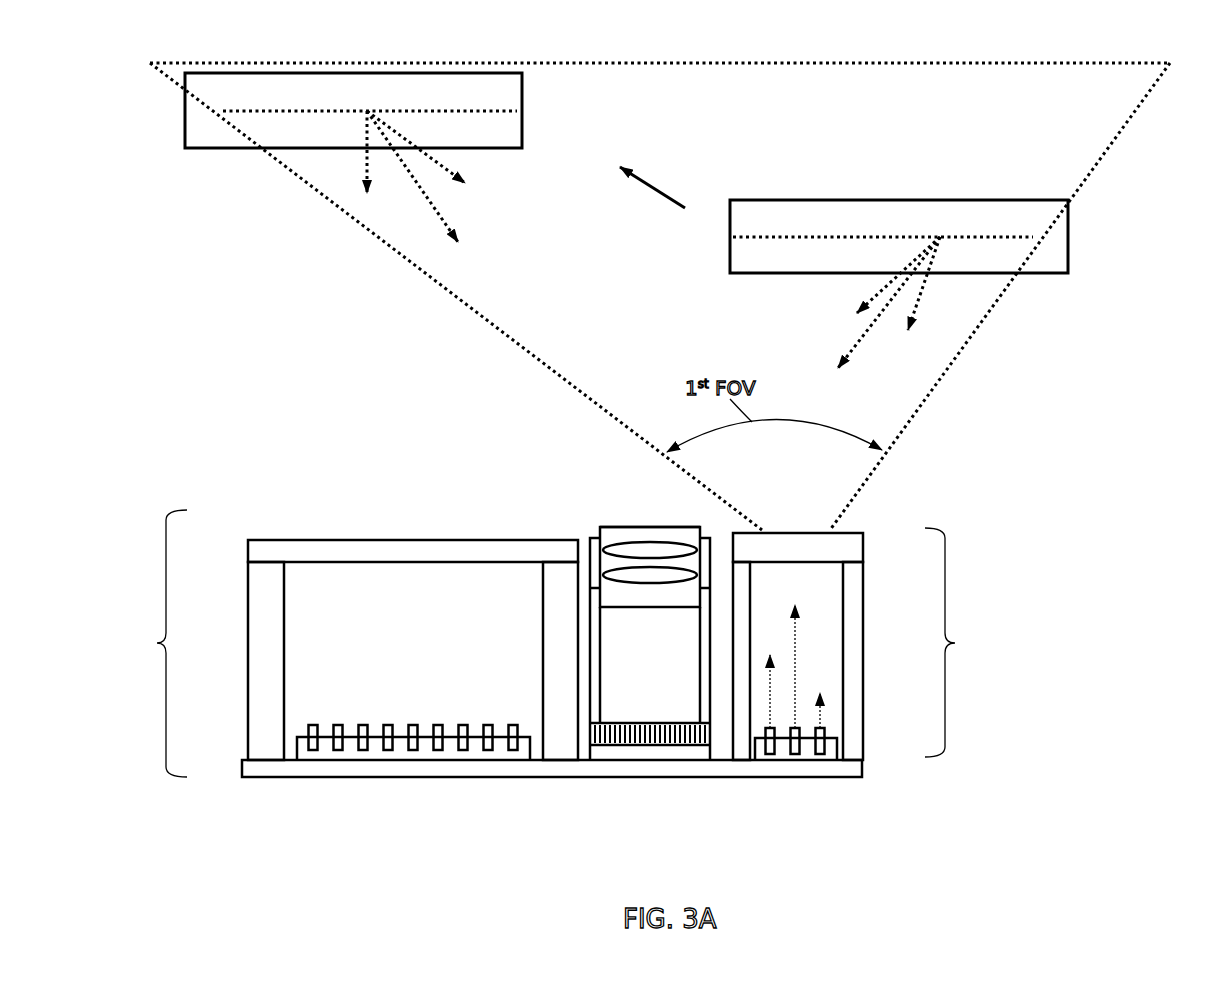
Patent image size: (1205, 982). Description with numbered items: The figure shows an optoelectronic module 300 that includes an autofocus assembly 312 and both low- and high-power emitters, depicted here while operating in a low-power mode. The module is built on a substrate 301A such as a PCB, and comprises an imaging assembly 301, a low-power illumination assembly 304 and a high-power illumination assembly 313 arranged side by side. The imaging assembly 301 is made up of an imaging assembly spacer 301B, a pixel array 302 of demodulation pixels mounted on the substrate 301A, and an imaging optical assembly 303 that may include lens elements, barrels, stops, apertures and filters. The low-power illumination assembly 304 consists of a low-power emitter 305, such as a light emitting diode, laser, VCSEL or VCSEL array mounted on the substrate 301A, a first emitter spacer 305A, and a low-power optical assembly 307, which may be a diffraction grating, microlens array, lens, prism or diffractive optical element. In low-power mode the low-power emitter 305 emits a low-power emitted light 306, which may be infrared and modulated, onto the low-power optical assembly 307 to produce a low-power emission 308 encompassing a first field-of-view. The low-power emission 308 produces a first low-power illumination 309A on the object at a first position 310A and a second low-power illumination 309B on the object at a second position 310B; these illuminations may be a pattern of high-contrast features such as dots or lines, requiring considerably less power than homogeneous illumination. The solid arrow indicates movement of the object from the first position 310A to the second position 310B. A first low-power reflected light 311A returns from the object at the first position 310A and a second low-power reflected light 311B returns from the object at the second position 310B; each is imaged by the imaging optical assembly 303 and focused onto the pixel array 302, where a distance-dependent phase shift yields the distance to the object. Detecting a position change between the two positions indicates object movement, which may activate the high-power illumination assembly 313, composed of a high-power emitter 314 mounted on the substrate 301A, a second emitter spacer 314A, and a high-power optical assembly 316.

The optoelectronic module 300 is at (122, 105).
The imaging assembly 301 is at (578, 474).
The substrate 301A is at (865, 766).
The imaging assembly spacer 301B is at (595, 680).
The pixel array 302 is at (686, 746).
The imaging optical assembly 303 is at (640, 546).
The low-power illumination assembly 304 is at (873, 661).
The low-power emitter 305 is at (828, 762).
The first emitter spacer 305A is at (853, 614).
The low-power emitted light 306 is at (800, 644).
The low-power optical assembly 307 is at (852, 532).
The low-power emission 308 is at (905, 426).
The first low-power illumination 309A is at (830, 236).
The second low-power illumination 309B is at (480, 114).
The object at a first position 310A is at (765, 200).
The object at a second position 310B is at (522, 86).
The first low-power reflected light 311A is at (858, 342).
The second low-power reflected light 311B is at (432, 205).
The autofocus assembly 312 is at (668, 527).
The high-power illumination assembly 313 is at (342, 660).
The high-power emitter 314 is at (297, 752).
The second emitter spacer 314A is at (260, 657).
The high-power optical assembly 316 is at (248, 546).